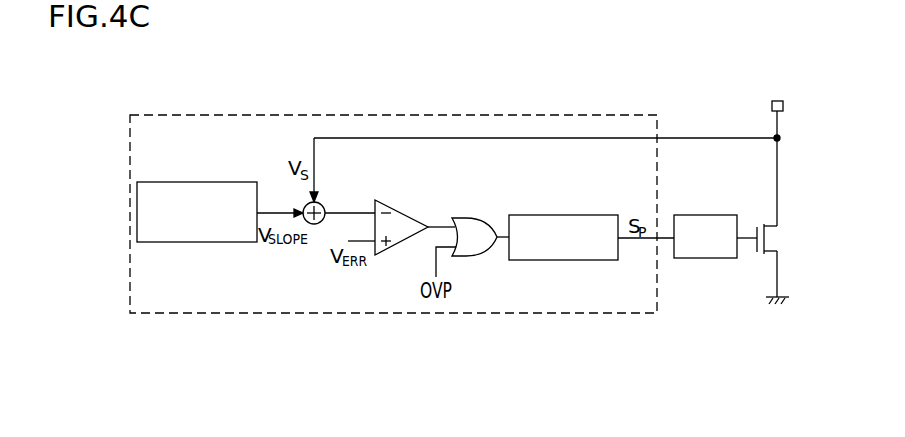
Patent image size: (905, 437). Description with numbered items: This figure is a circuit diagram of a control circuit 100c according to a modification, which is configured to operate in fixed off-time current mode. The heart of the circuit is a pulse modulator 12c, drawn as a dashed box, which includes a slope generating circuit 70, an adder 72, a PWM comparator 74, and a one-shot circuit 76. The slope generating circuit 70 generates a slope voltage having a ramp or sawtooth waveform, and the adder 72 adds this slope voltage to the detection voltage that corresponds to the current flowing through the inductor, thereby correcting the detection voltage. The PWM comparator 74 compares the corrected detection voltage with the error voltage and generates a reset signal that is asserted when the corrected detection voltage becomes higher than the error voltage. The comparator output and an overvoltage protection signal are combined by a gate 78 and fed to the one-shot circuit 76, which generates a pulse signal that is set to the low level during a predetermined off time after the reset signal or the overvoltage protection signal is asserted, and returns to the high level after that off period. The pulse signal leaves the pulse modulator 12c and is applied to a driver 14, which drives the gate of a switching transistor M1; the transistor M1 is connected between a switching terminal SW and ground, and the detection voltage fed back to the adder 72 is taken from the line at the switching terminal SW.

The pulse modulator 12c is at (220, 314).
The slope generating circuit 70 is at (191, 243).
The adder 72 is at (322, 205).
The PWM comparator 74 is at (398, 207).
The one-shot circuit 76 is at (580, 215).
The OR gate 78 is at (467, 217).
The driver 14 is at (718, 215).
The switching transistor M1 is at (785, 233).
The switching terminal SW is at (778, 100).
The control circuit 100c is at (487, 386).